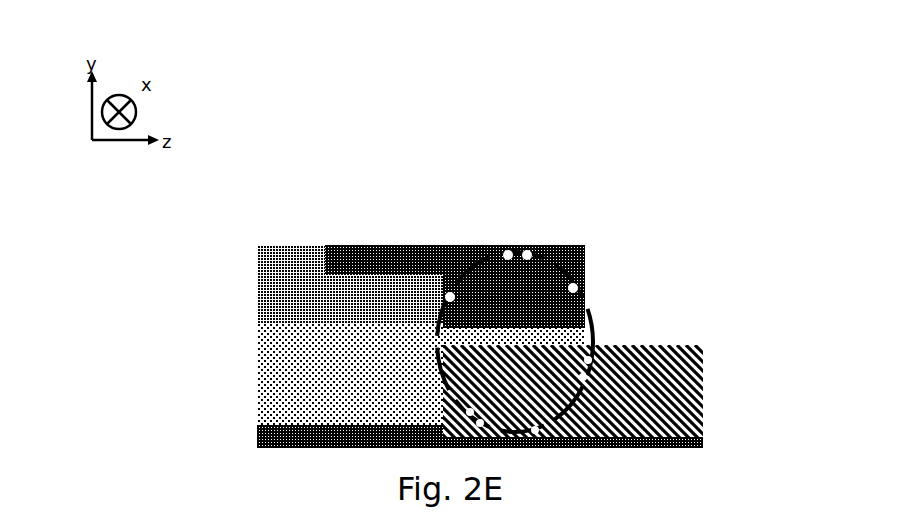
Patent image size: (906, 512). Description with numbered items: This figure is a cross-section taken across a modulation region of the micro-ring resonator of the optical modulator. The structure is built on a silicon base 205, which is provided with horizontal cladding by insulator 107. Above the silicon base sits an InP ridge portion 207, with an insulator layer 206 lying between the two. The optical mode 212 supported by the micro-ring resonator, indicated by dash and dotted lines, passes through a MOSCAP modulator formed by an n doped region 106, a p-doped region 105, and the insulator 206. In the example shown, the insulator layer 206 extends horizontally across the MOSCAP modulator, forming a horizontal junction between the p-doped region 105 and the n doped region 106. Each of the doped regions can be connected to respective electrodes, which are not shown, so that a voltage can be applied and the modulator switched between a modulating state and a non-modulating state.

The p-doped region 105 is at (670, 387).
The n doped region 106 is at (472, 247).
The insulator 107 is at (287, 353).
The silicon base 205 is at (290, 427).
The insulator layer 206 is at (562, 250).
The InP ridge portion 207 is at (302, 270).
The optical mode 212 is at (527, 250).